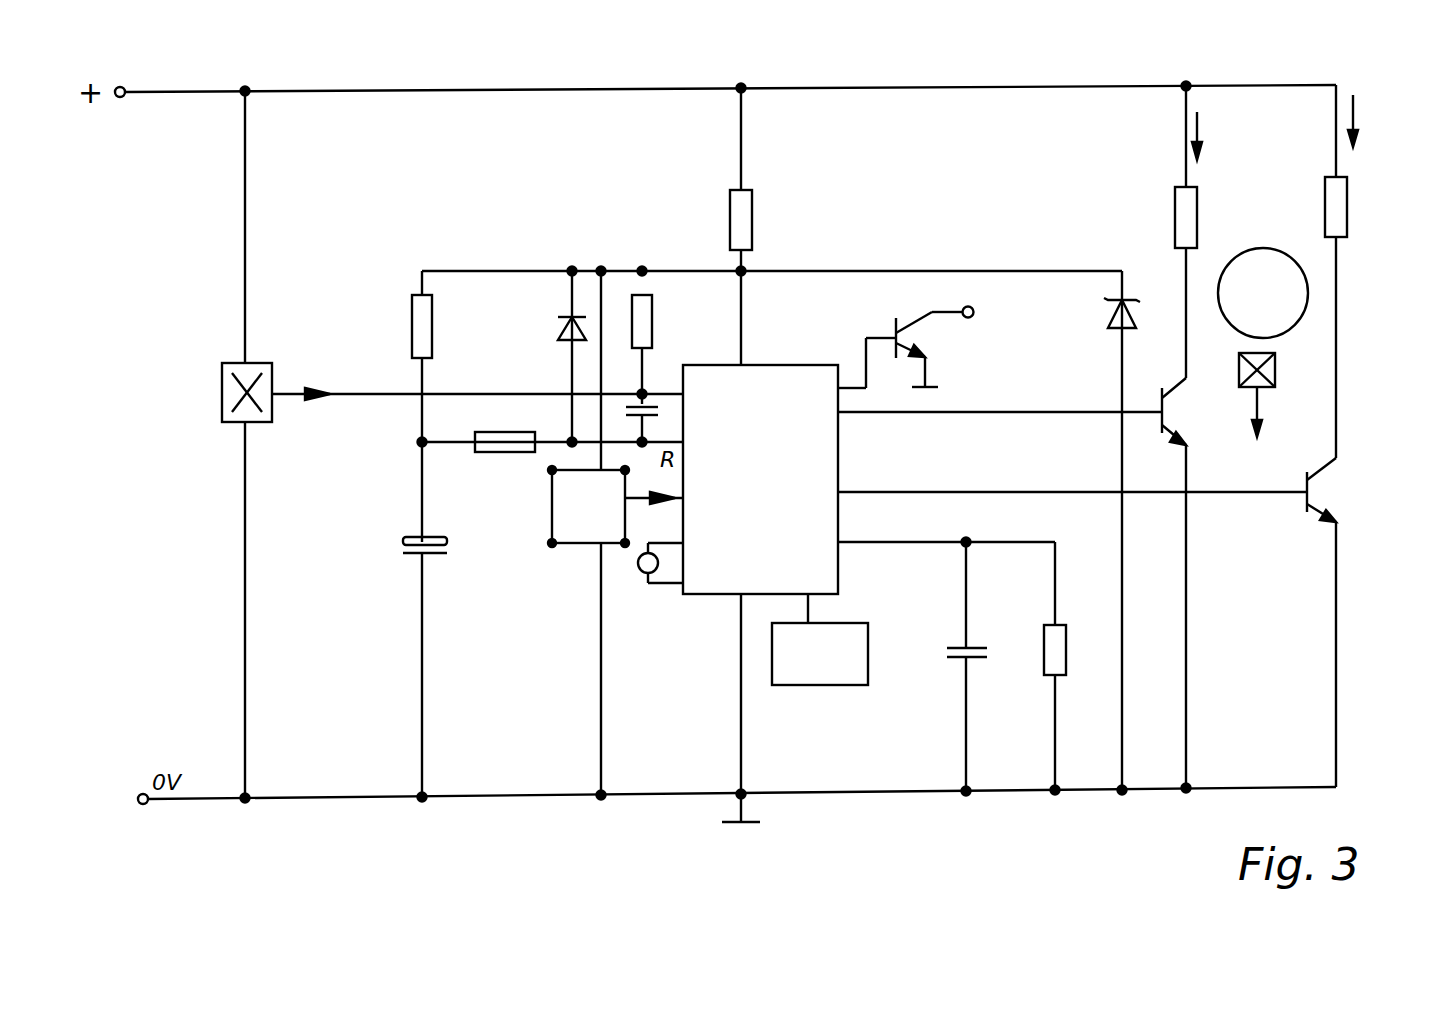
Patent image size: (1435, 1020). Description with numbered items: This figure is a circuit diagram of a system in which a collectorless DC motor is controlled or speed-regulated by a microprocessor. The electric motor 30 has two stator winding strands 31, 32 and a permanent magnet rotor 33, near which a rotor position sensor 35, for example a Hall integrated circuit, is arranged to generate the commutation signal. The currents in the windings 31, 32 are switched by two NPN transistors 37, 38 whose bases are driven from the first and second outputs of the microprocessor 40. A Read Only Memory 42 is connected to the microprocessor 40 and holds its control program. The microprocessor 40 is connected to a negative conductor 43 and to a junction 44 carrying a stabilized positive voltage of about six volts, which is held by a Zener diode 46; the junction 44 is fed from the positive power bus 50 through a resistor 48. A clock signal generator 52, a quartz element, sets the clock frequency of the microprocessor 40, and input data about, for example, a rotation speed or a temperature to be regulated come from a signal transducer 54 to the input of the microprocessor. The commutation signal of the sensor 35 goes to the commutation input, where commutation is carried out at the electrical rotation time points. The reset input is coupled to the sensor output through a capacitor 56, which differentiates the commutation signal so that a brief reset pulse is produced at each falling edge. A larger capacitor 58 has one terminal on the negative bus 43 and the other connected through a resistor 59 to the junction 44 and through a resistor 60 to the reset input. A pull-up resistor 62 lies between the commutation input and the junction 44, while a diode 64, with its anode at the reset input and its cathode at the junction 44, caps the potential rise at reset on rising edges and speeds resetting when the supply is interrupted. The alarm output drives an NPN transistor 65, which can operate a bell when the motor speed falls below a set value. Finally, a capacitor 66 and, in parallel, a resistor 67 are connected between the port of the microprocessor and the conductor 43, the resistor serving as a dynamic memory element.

The electric motor 30 is at (1283, 205).
The stator winding strand 31 is at (1175, 220).
The stator winding strand 32 is at (1350, 198).
The permanent magnet rotor 33 is at (1242, 333).
The rotor position sensor 35 is at (222, 392).
The NPN transistor 37 is at (1172, 415).
The NPN transistor 38 is at (1320, 488).
The microprocessor 40 is at (730, 578).
The Read Only Memory 42 is at (838, 685).
The negative conductor 43 is at (545, 803).
The junction 44 is at (745, 275).
The Zener diode 46 is at (1105, 328).
The resistor 48 is at (730, 228).
The positive power bus 50 is at (605, 85).
The clock signal generator 52 is at (642, 578).
The signal transducer 54 is at (552, 515).
The capacitor 56 is at (652, 403).
The capacitor 58 is at (402, 548).
The resistor 59 is at (412, 325).
The resistor 60 is at (498, 452).
The resistor 62 is at (650, 325).
The diode 64 is at (558, 330).
The NPN transistor 65 is at (892, 328).
The capacitor 66 is at (955, 645).
The resistor 67 is at (1045, 645).